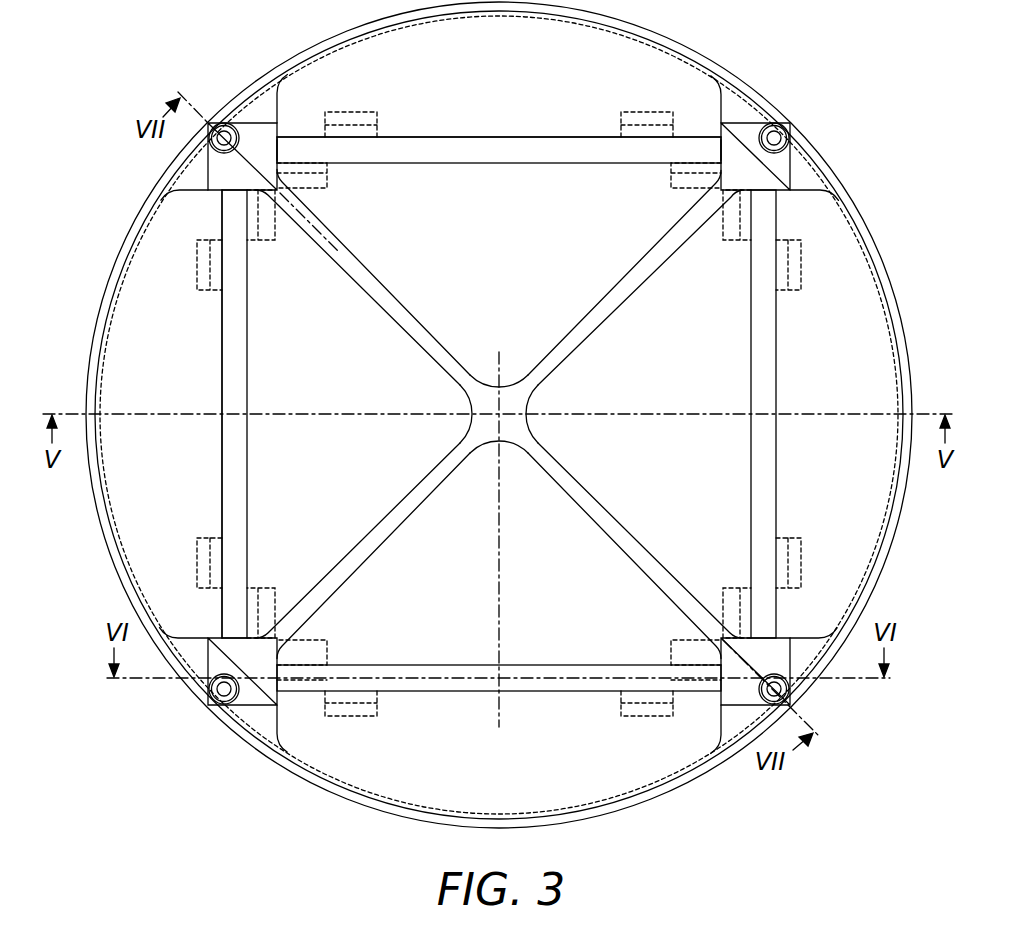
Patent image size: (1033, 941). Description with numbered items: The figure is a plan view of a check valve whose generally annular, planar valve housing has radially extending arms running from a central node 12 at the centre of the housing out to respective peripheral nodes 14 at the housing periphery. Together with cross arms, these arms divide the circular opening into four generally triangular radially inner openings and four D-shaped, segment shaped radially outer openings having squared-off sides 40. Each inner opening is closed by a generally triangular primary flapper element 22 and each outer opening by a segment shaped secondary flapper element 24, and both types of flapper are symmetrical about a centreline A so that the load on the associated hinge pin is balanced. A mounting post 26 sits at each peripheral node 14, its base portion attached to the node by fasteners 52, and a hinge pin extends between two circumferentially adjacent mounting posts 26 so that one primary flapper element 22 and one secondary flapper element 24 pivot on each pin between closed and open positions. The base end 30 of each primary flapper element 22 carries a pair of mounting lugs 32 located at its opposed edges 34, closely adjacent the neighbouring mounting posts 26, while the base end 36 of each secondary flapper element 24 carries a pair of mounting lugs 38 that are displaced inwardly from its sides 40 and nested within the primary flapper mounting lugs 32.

The central node 12 is at (500, 413).
The peripheral node 14 is at (254, 97).
The primary flapper element 22 is at (484, 292).
The secondary flapper element 24 is at (484, 80).
The mounting post 26 is at (262, 147).
The base end of primary flapper 30 is at (484, 199).
The primary flapper mounting lug 32 is at (262, 238).
The opposed edge of primary flapper element 34 is at (290, 148).
The base end of secondary flapper 36 is at (568, 136).
The secondary flapper mounting lug 38 is at (208, 263).
The squared-off side 40 is at (282, 97).
The fastener 52 is at (210, 150).
The centreline A is at (502, 597).